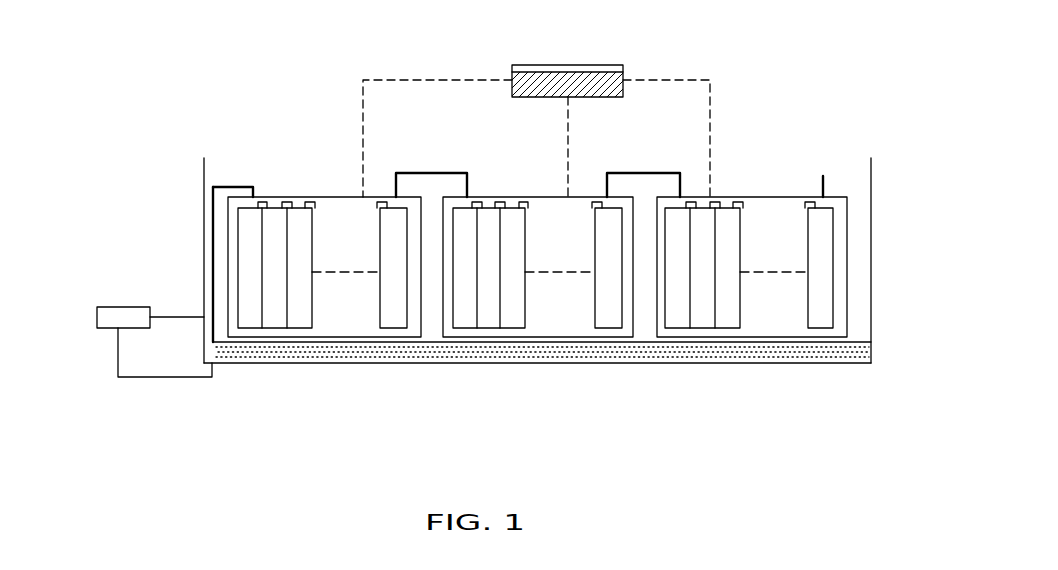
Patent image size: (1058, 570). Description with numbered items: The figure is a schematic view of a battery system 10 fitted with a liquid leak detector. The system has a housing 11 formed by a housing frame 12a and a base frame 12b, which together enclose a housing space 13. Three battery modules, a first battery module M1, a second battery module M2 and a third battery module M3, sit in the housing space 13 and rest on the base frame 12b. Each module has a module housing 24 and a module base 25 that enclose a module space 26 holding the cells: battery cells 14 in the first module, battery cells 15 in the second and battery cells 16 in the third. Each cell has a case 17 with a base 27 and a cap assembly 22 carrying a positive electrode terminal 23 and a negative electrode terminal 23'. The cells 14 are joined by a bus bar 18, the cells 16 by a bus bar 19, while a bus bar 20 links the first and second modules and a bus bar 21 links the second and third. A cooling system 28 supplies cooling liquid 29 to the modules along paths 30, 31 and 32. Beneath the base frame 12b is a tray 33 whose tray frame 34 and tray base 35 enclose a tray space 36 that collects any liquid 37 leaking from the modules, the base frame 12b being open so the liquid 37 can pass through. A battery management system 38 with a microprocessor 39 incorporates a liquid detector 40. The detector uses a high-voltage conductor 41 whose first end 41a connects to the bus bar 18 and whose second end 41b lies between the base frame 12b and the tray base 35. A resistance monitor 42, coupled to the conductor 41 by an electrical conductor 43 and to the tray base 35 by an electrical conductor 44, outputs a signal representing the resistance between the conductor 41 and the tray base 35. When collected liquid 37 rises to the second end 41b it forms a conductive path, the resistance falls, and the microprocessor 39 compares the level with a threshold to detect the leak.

The battery system 10 is at (642, 37).
The housing 11 is at (879, 168).
The housing frame 12a is at (874, 183).
The base frame 12b is at (857, 337).
The housing space 13 is at (855, 247).
The battery cells 14 is at (255, 318).
The battery cells 15 is at (486, 318).
The battery cells 16 is at (682, 317).
The case 17 is at (318, 312).
The bus bar 18 is at (252, 186).
The bus bar 19 is at (823, 177).
The bus bar 20 is at (452, 173).
The bus bar 21 is at (652, 173).
The cap assembly 22 is at (273, 202).
The positive electrode terminal 23 is at (596, 162).
The negative electrode terminal 23' is at (203, 208).
The module housing 24 is at (848, 272).
The module base 25 is at (808, 342).
The module space 26 is at (770, 330).
The base 27 is at (823, 322).
The cooling system 28 is at (533, 65).
The cooling liquid 29 is at (623, 72).
The path 30 is at (428, 78).
The path 31 is at (568, 113).
The path 32 is at (713, 107).
The tray 33 is at (879, 354).
The tray frame 34 is at (207, 360).
The tray base 35 is at (842, 366).
The tray space 36 is at (205, 350).
The liquid 37 is at (408, 350).
The battery management system 38 is at (110, 307).
The microprocessor 39 is at (97, 317).
The liquid detector 40 is at (162, 274).
The high-voltage conductor 41 is at (205, 238).
The first end 41a is at (250, 186).
The second end 41b is at (212, 368).
The resistance monitor 42 is at (110, 328).
The electrical conductor 43 is at (168, 317).
The electrical conductor 44 is at (115, 365).
The first battery module M1 is at (305, 187).
The second battery module M2 is at (519, 185).
The third battery module M3 is at (730, 188).